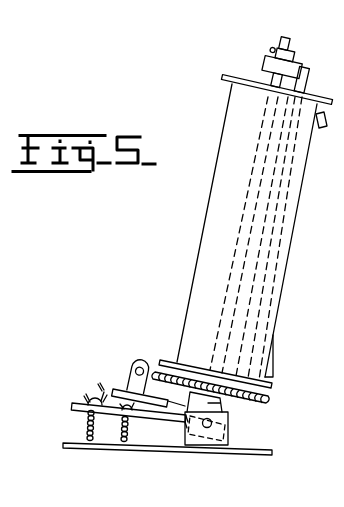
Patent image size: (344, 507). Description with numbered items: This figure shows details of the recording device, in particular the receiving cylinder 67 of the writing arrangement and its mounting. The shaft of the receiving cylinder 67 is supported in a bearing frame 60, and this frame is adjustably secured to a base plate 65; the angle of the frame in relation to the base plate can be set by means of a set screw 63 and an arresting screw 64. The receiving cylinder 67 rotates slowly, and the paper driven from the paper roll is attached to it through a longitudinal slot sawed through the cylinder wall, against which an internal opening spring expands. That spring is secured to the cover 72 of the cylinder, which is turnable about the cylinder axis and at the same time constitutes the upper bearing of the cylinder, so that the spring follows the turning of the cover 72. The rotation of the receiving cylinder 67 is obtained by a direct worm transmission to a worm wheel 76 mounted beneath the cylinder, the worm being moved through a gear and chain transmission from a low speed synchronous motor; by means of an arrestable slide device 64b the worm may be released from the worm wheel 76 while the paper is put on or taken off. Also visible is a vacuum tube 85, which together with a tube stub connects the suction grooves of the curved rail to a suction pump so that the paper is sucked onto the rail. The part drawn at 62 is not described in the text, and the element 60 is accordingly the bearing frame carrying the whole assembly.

The bearing frame 60 is at (308, 80).
The fitting 62 is at (292, 46).
The set screw 63 is at (129, 430).
The arresting screw 64 is at (96, 385).
The arrestable slide device 64b is at (138, 360).
The base plate 65 is at (263, 448).
The receiving cylinder 67 is at (210, 223).
The cover 72 is at (238, 76).
The worm wheel 76 is at (266, 399).
The vacuum tube 85 is at (319, 128).